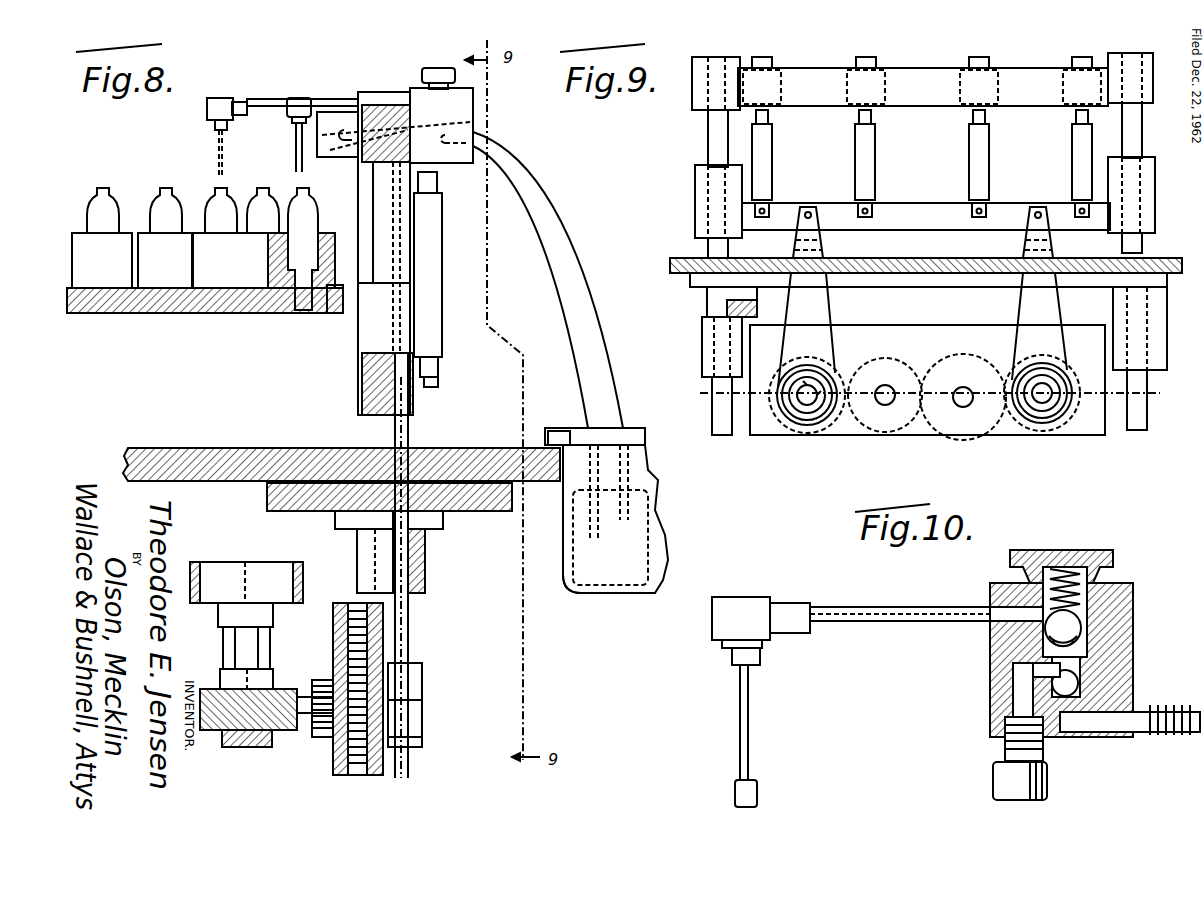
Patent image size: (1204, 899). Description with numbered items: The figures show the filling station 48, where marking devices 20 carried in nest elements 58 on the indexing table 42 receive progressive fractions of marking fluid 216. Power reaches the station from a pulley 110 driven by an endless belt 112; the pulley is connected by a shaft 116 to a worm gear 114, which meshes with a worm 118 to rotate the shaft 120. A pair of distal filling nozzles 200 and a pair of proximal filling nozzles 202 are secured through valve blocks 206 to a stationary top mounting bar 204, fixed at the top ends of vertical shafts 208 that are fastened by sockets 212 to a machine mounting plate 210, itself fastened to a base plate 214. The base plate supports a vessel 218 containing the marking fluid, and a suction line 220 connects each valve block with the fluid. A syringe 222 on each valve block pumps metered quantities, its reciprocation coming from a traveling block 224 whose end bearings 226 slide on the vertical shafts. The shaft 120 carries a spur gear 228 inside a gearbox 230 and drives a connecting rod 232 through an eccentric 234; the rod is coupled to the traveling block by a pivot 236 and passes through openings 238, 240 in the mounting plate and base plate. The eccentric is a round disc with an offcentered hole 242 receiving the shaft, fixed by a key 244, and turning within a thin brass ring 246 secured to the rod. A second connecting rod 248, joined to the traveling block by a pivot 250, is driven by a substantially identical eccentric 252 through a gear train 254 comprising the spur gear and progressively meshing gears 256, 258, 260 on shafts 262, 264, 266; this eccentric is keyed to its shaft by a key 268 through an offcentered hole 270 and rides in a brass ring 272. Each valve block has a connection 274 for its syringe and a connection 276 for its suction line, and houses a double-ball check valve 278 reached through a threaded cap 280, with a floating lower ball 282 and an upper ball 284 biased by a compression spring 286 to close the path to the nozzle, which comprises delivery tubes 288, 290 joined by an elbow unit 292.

In FIG. 8, the marking devices 20 is at (212, 186).
In FIG. 8, the table 42 is at (147, 313).
In FIG. 8, the filling station 48 is at (160, 135).
In FIG. 8, the nest elements 58 is at (265, 313).
In FIG. 8, the pulley 110 is at (203, 562).
In FIG. 8, the endless belt 112 is at (300, 565).
In FIG. 8, the worm gear 114 is at (280, 690).
In FIG. 8, the shaft 116 is at (275, 617).
In FIG. 8, the worm 118 is at (240, 748).
In FIG. 8, the shaft 120 is at (304, 732).
In FIG. 9, the shaft 120 is at (816, 392).
In FIG. 8, the distal filling nozzles 200 is at (220, 97).
In FIG. 10, the distal filling nozzles 200 is at (823, 606).
In FIG. 8, the proximal filling nozzles 202 is at (299, 97).
In FIG. 8, the top mounting bar 204 is at (385, 92).
In FIG. 9, the top mounting bar 204 is at (1012, 67).
In FIG. 8, the valve blocks 206 is at (455, 110).
In FIG. 9, the valve blocks 206 is at (767, 82).
In FIG. 10, the valve blocks 206 is at (1130, 590).
In FIG. 8, the vertical shafts 208 is at (378, 548).
In FIG. 9, the vertical shafts 208 is at (708, 134).
In FIG. 8, the machine mounting plate 210 is at (482, 511).
In FIG. 9, the machine mounting plate 210 is at (697, 290).
In FIG. 8, the sockets 212 is at (433, 565).
In FIG. 9, the sockets 212 is at (703, 335).
In FIG. 8, the base plate 214 is at (181, 447).
In FIG. 9, the base plate 214 is at (686, 258).
In FIG. 8, the marking fluid 216 is at (633, 548).
In FIG. 8, the vessel 218 is at (596, 594).
In FIG. 8, the suction line 220 is at (547, 265).
In FIG. 10, the suction line 220 is at (1180, 700).
In FIG. 8, the syringe 222 is at (440, 322).
In FIG. 9, the syringe 222 is at (775, 135).
In FIG. 10, the syringe 222 is at (1047, 775).
In FIG. 8, the traveling block 224 is at (360, 392).
In FIG. 9, the traveling block 224 is at (915, 202).
In FIG. 8, the bearings 226 is at (360, 323).
In FIG. 9, the bearings 226 is at (697, 200).
In FIG. 8, the spur gear 228 is at (358, 648).
In FIG. 9, the spur gear 228 is at (778, 440).
In FIG. 8, the gearbox 230 is at (383, 766).
In FIG. 9, the gearbox 230 is at (1105, 433).
In FIG. 8, the connecting rod 232 is at (412, 608).
In FIG. 9, the connecting rod 232 is at (822, 312).
In FIG. 8, the eccentric 234 is at (420, 697).
In FIG. 9, the eccentric 234 is at (780, 403).
In FIG. 8, the pivot 236 is at (436, 395).
In FIG. 9, the pivot 236 is at (808, 206).
In FIG. 8, the opening 238 is at (455, 470).
In FIG. 9, the opening 238 is at (797, 263).
In FIG. 8, the opening 240 is at (415, 452).
In FIG. 9, the opening 240 is at (833, 262).
In FIG. 9, the offcentered hole 242 is at (800, 425).
In FIG. 9, the key 244 is at (770, 393).
In FIG. 9, the brass ring 246 is at (812, 428).
In FIG. 9, the second connecting rod 248 is at (1048, 310).
In FIG. 9, the pivot 250 is at (1037, 205).
In FIG. 9, the eccentric 252 is at (1060, 435).
In FIG. 9, the gear train 254 is at (925, 360).
In FIG. 9, the gear 256 is at (858, 436).
In FIG. 9, the gear 258 is at (960, 437).
In FIG. 9, the gear 260 is at (1007, 430).
In FIG. 9, the shaft 262 is at (890, 400).
In FIG. 9, the shaft 264 is at (963, 385).
In FIG. 9, the shaft 266 is at (1050, 393).
In FIG. 9, the key 268 is at (1048, 388).
In FIG. 9, the offcentered hole 270 is at (1060, 408).
In FIG. 9, the brass ring 272 is at (1035, 430).
In FIG. 10, the connection 274 is at (1005, 728).
In FIG. 10, the connection 276 is at (1110, 700).
In FIG. 10, the double-ball check valve 278 is at (1085, 655).
In FIG. 8, the threaded cap 280 is at (437, 67).
In FIG. 9, the threaded cap 280 is at (758, 57).
In FIG. 10, the threaded cap 280 is at (1093, 548).
In FIG. 10, the lower ball 282 is at (1013, 668).
In FIG. 10, the upper ball 284 is at (1047, 633).
In FIG. 10, the compression spring 286 is at (1060, 548).
In FIG. 10, the delivery tube 288 is at (867, 610).
In FIG. 10, the delivery tube 290 is at (750, 710).
In FIG. 10, the elbow unit 292 is at (723, 606).